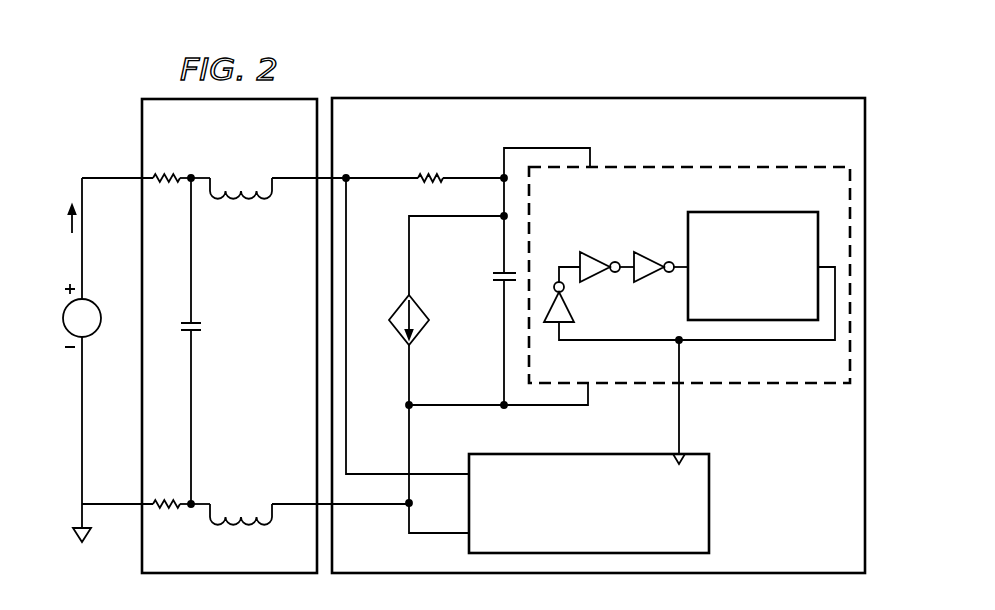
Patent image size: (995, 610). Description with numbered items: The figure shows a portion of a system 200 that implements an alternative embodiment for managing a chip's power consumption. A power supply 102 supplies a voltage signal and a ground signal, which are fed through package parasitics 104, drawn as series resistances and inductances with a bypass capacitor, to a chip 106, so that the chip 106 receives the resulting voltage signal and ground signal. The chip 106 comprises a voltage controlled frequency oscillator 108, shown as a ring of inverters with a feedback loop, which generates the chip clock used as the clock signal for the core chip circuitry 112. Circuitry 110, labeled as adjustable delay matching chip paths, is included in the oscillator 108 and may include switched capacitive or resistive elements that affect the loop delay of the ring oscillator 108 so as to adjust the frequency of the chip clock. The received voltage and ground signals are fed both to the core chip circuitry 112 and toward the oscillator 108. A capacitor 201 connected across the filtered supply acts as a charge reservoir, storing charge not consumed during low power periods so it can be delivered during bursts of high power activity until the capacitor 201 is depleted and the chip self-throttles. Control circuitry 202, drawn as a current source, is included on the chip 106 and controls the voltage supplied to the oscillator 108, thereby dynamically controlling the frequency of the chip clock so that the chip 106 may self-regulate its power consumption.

The system 200 is at (700, 73).
The power supply 102 is at (96, 303).
The package parasitics 104 is at (142, 133).
The chip 106 is at (599, 97).
The voltage controlled frequency oscillator 108 is at (700, 166).
The circuitry 110 is at (688, 232).
The core chip circuitry 112 is at (709, 532).
The capacitor 201 is at (492, 276).
The control circuitry 202 is at (418, 336).